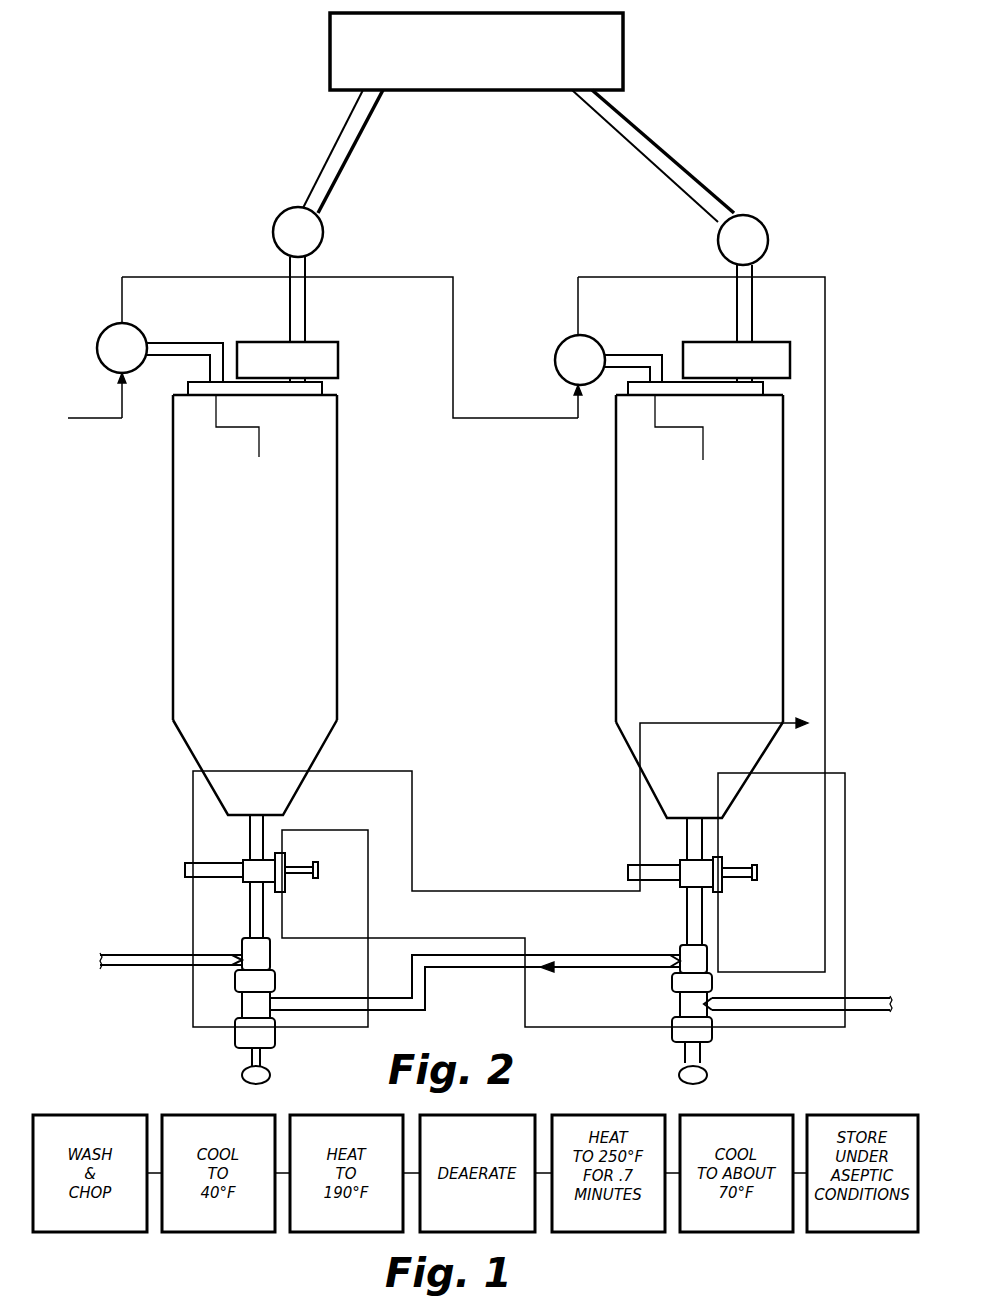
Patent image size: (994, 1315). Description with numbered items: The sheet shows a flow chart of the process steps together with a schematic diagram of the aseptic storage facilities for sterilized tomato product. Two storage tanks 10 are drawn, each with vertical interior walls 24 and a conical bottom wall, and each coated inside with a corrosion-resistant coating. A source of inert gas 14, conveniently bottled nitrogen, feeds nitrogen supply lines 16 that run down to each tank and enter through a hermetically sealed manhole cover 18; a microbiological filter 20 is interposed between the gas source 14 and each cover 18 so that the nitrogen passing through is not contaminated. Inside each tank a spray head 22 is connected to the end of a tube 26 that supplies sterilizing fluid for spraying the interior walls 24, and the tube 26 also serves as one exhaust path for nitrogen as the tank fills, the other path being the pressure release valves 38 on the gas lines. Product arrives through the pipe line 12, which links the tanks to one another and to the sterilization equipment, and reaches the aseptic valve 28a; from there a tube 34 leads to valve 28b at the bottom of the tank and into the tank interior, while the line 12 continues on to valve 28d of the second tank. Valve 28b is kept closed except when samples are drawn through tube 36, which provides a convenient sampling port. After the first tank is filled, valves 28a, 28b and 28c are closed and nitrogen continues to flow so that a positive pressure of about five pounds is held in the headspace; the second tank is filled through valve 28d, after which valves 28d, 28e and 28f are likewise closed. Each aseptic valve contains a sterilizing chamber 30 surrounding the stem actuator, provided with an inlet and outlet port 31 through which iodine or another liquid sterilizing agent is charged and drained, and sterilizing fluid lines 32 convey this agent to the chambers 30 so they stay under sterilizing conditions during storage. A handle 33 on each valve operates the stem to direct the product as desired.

The storage tank 10 is at (478, 606).
The pipe line 12 is at (548, 970).
The source of inert gas 14 is at (630, 42).
The nitrogen supply line 16 is at (372, 116).
The hermetically sealed manhole cover 18 is at (286, 391).
The microbiological filter 20 is at (334, 345).
The spray head 22 is at (248, 452).
The interior wall 24 is at (174, 544).
The tube 26 is at (198, 343).
The aseptic valve 28a is at (236, 1045).
The aseptic valve 28b is at (288, 884).
The aseptic valve 28c is at (140, 330).
The aseptic valve 28d is at (706, 1050).
The aseptic valve 28e is at (724, 864).
The aseptic valve 28f is at (555, 350).
The sterilizing chamber 30 is at (285, 860).
The inlet and outlet port 31 is at (282, 892).
The sterilizing fluid line 32 is at (92, 432).
The handle 33 is at (320, 870).
The tube 34 is at (250, 905).
The tube 36 is at (212, 862).
The pressure release valve 38 is at (324, 232).